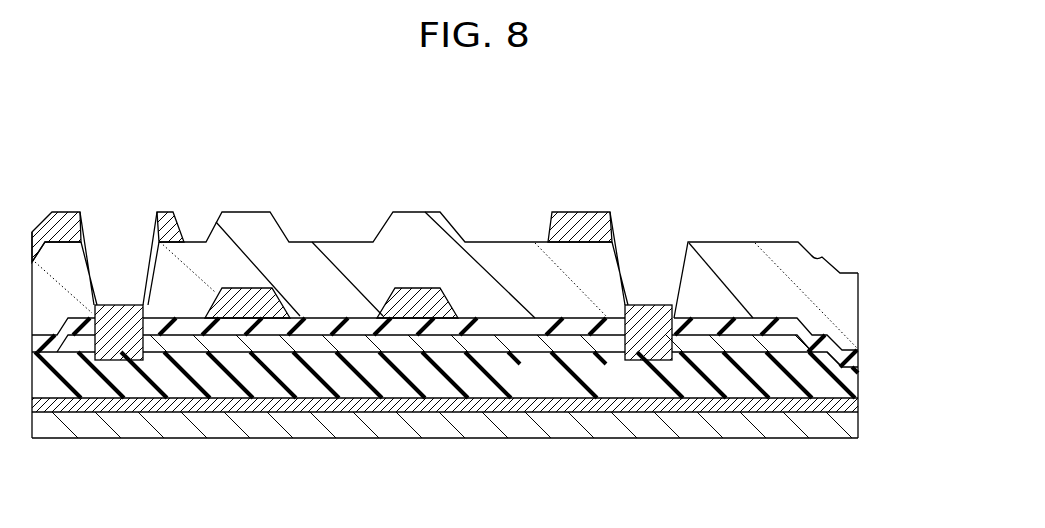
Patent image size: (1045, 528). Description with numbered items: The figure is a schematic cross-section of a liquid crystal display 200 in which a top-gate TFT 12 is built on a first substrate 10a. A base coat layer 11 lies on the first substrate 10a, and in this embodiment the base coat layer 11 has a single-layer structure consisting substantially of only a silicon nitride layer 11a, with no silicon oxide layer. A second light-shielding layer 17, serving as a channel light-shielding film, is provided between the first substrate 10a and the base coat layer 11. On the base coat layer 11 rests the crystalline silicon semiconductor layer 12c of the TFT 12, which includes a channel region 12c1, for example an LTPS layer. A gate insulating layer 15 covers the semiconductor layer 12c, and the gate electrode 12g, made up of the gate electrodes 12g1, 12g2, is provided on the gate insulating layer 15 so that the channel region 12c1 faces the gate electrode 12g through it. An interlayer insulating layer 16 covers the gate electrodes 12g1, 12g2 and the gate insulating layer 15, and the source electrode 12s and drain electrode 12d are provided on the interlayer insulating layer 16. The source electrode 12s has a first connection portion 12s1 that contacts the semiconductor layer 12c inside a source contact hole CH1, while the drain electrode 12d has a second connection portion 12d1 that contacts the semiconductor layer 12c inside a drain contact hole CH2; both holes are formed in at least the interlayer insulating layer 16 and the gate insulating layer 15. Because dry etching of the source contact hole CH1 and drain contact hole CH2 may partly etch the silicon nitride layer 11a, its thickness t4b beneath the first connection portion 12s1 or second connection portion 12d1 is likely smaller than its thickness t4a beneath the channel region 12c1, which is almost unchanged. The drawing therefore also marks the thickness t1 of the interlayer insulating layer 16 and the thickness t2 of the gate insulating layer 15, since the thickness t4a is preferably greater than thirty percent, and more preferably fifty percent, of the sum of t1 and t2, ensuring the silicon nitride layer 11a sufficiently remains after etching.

The liquid crystal display 200 is at (832, 170).
The first substrate 10a is at (842, 430).
The base coat layer 11 is at (490, 424).
The silicon nitride layer 11a is at (838, 382).
The second light-shielding layer 17 is at (558, 405).
The TFT 12 is at (326, 271).
The semiconductor layer 12c is at (312, 347).
The channel region 12c1 is at (238, 346).
The source electrode 12s is at (58, 210).
The first connection portion 12s1 is at (117, 346).
The drain electrode 12d is at (580, 225).
The second connection portion 12d1 is at (648, 350).
The gate electrode 12g is at (352, 223).
The gate electrode 12g1 is at (238, 316).
The gate electrode 12g2 is at (409, 310).
The gate insulating layer 15 is at (466, 322).
The interlayer insulating layer 16 is at (743, 278).
The source contact hole CH1 is at (119, 286).
The drain contact hole CH2 is at (651, 284).
The thickness of interlayer insulating layer t1 is at (506, 242).
The thickness of gate insulating layer t2 is at (506, 318).
The thickness of silicon nitride layer in region overlapping channel region t4a is at (490, 352).
The thickness of silicon nitride layer in region overlapping connection portion t4b is at (638, 360).